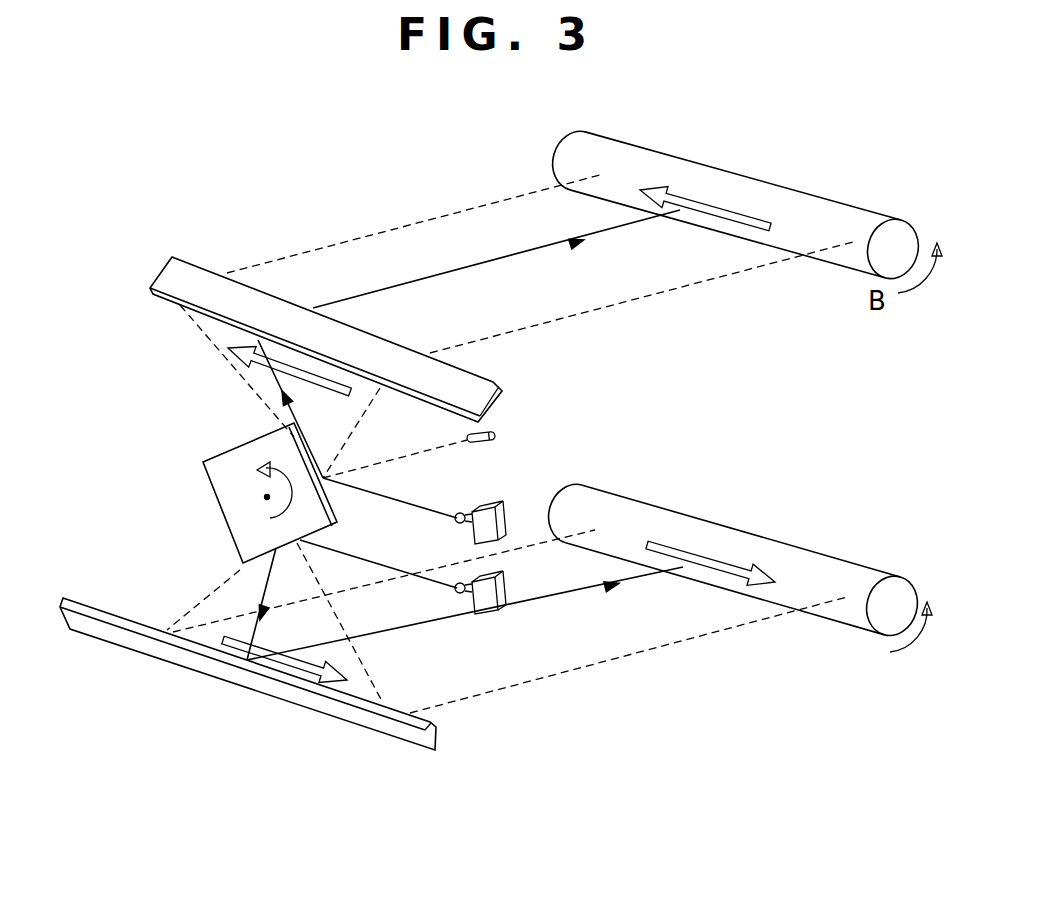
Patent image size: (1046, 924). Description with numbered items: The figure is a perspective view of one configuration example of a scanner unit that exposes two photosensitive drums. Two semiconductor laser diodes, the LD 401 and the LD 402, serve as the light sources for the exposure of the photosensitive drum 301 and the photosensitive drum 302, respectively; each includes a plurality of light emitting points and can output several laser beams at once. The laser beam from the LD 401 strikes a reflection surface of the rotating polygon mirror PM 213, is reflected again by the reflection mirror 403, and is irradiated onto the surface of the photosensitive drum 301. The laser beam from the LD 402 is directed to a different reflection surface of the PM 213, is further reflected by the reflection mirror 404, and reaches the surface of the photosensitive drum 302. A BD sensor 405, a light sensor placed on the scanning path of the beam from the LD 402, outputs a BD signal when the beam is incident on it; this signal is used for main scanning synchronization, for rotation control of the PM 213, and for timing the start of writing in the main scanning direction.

The PM 213 is at (215, 458).
The photosensitive drum 301 is at (852, 563).
The photosensitive drum 302 is at (833, 207).
The LD 401 is at (502, 593).
The LD 402 is at (500, 515).
The reflection mirror 403 is at (433, 733).
The reflection mirror 404 is at (480, 390).
The BD sensor 405 is at (495, 435).